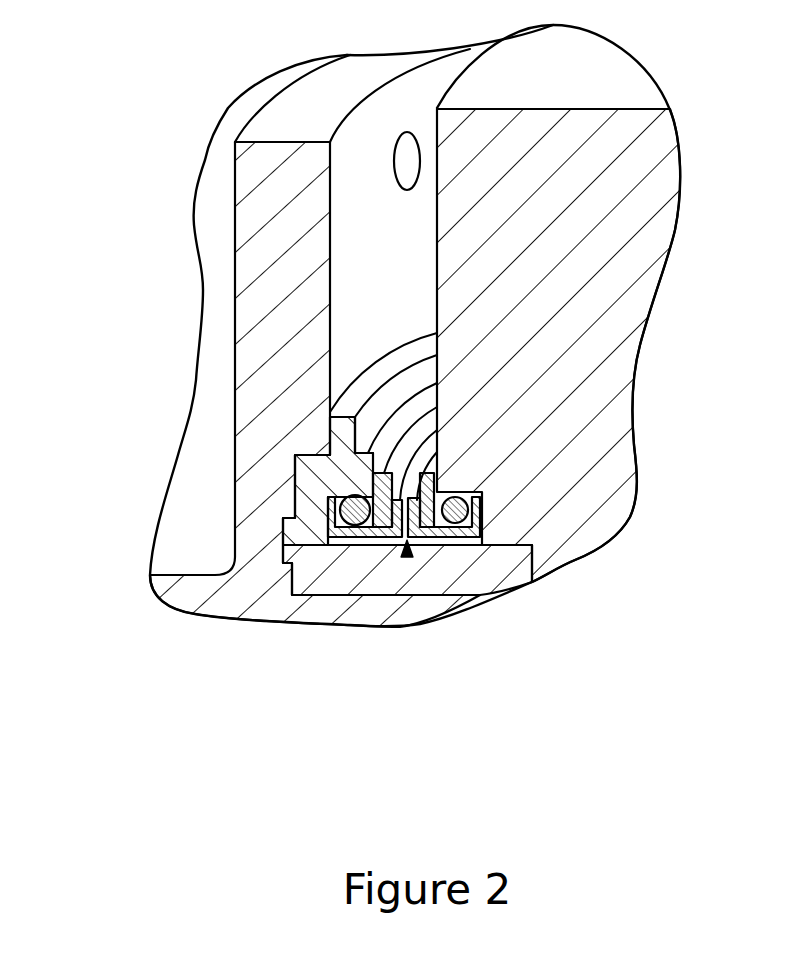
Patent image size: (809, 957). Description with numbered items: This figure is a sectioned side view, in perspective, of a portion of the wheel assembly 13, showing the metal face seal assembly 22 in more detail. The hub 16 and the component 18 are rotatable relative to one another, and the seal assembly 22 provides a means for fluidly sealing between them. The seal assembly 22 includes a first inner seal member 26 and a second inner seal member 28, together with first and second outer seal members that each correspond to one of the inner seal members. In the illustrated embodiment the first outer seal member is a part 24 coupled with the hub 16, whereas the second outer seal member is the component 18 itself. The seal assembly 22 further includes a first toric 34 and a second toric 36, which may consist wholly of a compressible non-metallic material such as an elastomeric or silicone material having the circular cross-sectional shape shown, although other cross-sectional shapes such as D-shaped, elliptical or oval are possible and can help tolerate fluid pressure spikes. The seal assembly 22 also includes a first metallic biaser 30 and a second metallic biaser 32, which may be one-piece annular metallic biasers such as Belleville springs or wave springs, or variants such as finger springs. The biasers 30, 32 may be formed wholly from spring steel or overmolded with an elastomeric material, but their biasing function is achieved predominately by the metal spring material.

The wheel assembly 13 is at (195, 327).
The hub 16 is at (249, 172).
The component 18 is at (663, 174).
The metal face seal assembly 22 is at (405, 557).
The part 24 is at (297, 483).
The first inner seal member 26 is at (371, 490).
The second inner seal member 28 is at (424, 510).
The first metallic biaser 30 is at (331, 446).
The second metallic biaser 32 is at (438, 480).
The first toric 34 is at (350, 506).
The second toric 36 is at (468, 492).